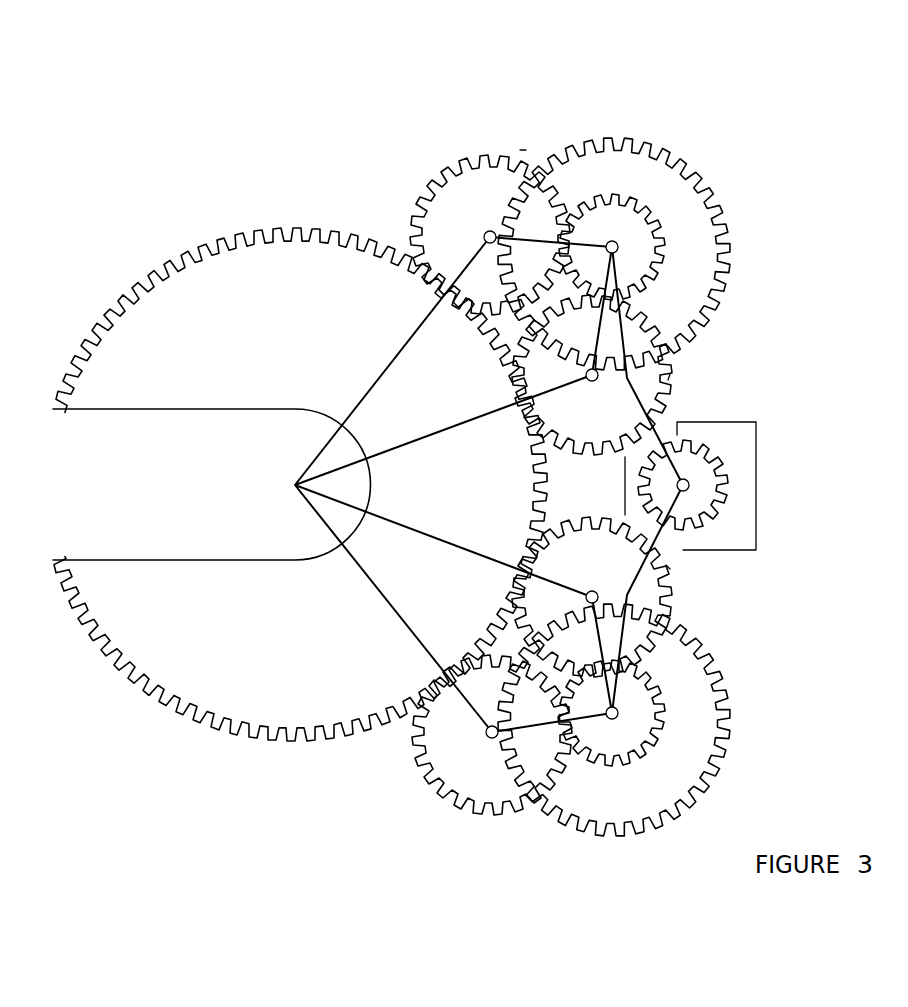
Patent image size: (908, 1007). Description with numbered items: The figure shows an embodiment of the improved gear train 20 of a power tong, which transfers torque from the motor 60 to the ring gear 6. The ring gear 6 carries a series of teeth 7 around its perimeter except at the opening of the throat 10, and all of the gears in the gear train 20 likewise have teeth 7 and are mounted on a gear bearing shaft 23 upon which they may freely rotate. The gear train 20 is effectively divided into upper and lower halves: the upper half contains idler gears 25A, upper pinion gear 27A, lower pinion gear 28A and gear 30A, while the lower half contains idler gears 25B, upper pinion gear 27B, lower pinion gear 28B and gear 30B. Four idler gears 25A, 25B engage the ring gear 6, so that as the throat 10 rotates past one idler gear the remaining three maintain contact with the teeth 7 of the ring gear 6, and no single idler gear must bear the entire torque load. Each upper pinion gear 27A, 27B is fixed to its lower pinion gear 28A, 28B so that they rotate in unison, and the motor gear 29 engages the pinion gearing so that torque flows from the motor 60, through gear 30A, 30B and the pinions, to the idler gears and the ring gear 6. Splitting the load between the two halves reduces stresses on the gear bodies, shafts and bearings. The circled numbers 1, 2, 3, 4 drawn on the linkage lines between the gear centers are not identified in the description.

The ring gear 6 is at (173, 369).
The teeth 7 is at (243, 232).
The throat 10 is at (105, 501).
The gear train 20 is at (538, 148).
The gear bearing shaft 23 is at (605, 312).
The idler gears 25A is at (458, 183).
The idler gears 25B is at (603, 576).
The upper pinion gear 27A is at (633, 213).
The upper pinion gear 27B is at (613, 745).
The lower pinion gear 28A is at (697, 208).
The lower pinion gear 28B is at (684, 762).
The motor gear 29 is at (700, 458).
The gear 30A is at (670, 385).
The gear 30B is at (687, 563).
The motor 60 is at (752, 492).
The frame link 1 is at (654, 470).
The link 2 is at (645, 480).
The link 3 is at (553, 482).
The link 4 is at (443, 484).